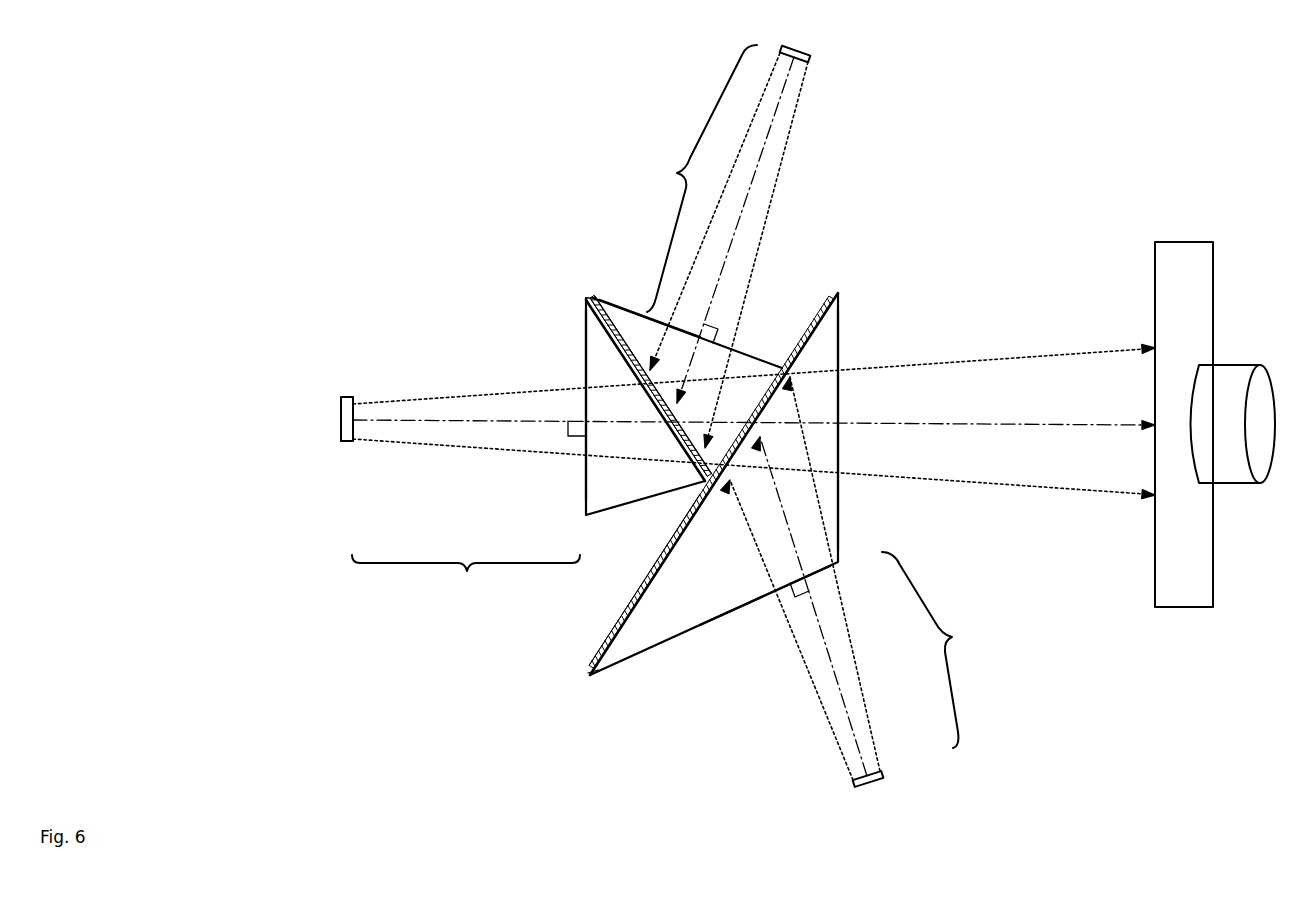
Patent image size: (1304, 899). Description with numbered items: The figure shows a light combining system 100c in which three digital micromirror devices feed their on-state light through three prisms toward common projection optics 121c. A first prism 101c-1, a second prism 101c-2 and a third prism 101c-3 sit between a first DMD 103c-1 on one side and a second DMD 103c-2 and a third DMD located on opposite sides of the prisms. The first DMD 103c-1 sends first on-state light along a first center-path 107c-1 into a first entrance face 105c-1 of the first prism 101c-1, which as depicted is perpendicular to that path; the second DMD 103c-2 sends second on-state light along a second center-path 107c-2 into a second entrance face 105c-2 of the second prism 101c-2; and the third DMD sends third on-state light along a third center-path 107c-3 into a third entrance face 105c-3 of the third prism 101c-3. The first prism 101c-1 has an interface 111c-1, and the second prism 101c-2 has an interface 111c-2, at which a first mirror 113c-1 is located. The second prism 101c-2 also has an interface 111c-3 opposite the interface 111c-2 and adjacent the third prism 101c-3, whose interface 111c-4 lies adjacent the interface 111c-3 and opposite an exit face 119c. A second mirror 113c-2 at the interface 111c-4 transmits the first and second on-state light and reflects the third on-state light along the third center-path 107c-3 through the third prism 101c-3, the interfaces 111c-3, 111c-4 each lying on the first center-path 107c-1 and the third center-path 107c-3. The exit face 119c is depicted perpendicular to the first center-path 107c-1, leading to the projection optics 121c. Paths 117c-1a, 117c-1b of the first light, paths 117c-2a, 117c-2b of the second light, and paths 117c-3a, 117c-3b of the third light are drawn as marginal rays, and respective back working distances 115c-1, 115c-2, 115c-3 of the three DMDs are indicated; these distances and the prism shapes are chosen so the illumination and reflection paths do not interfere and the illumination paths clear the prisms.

The system 100c is at (198, 96).
The first prism 101c-1 is at (598, 348).
The second prism 101c-2 is at (635, 478).
The third prism 101c-3 is at (643, 635).
The first DMD 103c-1 is at (340, 400).
The second DMD 103c-2 is at (810, 58).
The first entrance face 105c-1 is at (585, 377).
The second entrance face 105c-2 is at (617, 305).
The third entrance face 105c-3 is at (748, 606).
The first center-path 107c-1 is at (393, 422).
The second center-path 107c-2 is at (737, 220).
The third center-path 107c-3 is at (855, 732).
The interface 111c-1 is at (595, 315).
The interface 111c-2 is at (605, 308).
The interface 111c-3 is at (785, 367).
The interface 111c-4 is at (617, 626).
The first mirror 113c-1 is at (598, 298).
The second mirror 113c-2 is at (588, 672).
The back working distance 115c-1 is at (466, 577).
The back working distance 115c-2 is at (681, 178).
The back working distance 115c-3 is at (953, 650).
The path 117c-1a is at (522, 452).
The path 117c-1b is at (462, 393).
The path 117c-2a is at (798, 102).
The path 117c-2b is at (743, 140).
The marginal ray of third light beam 117c-3a is at (820, 703).
The marginal ray of third light beam 117c-3b is at (907, 704).
The exit face 119c is at (840, 496).
The projection optics 121c is at (1205, 318).